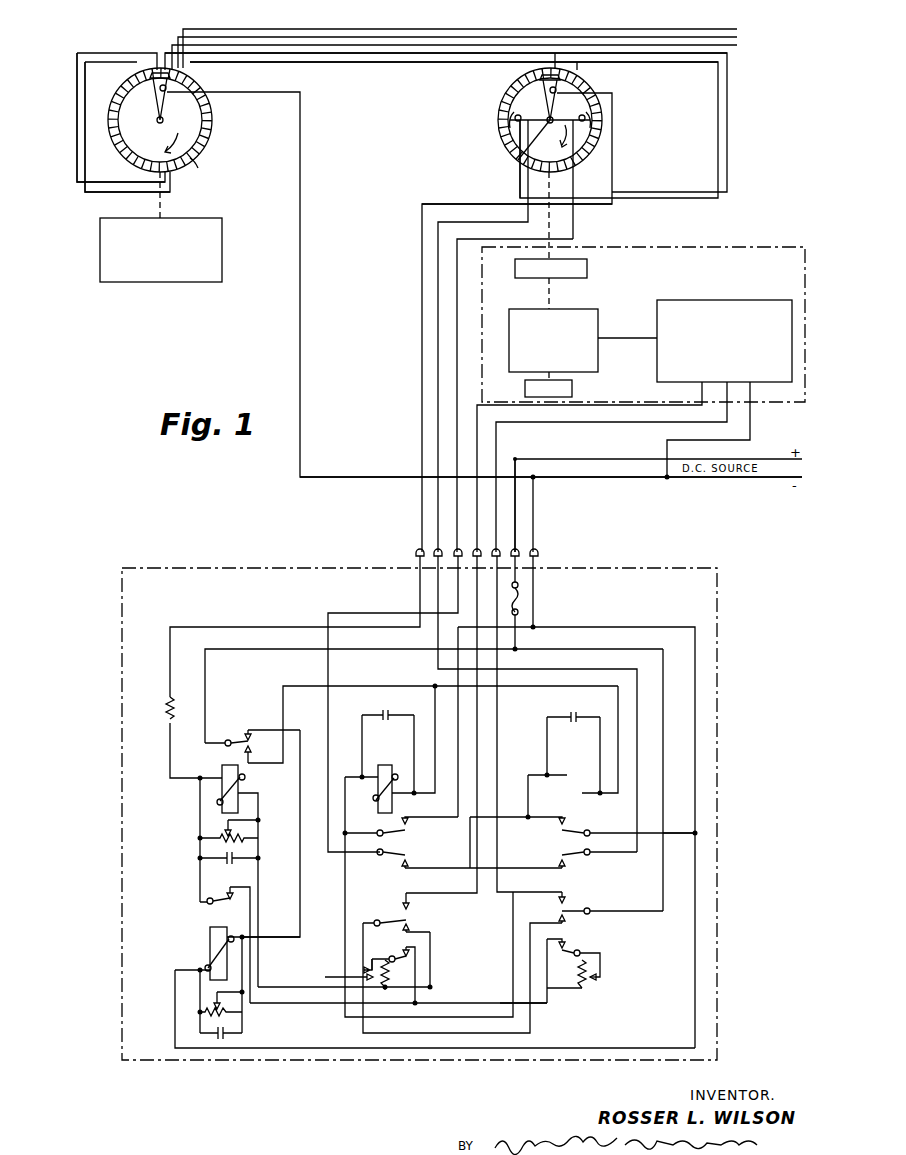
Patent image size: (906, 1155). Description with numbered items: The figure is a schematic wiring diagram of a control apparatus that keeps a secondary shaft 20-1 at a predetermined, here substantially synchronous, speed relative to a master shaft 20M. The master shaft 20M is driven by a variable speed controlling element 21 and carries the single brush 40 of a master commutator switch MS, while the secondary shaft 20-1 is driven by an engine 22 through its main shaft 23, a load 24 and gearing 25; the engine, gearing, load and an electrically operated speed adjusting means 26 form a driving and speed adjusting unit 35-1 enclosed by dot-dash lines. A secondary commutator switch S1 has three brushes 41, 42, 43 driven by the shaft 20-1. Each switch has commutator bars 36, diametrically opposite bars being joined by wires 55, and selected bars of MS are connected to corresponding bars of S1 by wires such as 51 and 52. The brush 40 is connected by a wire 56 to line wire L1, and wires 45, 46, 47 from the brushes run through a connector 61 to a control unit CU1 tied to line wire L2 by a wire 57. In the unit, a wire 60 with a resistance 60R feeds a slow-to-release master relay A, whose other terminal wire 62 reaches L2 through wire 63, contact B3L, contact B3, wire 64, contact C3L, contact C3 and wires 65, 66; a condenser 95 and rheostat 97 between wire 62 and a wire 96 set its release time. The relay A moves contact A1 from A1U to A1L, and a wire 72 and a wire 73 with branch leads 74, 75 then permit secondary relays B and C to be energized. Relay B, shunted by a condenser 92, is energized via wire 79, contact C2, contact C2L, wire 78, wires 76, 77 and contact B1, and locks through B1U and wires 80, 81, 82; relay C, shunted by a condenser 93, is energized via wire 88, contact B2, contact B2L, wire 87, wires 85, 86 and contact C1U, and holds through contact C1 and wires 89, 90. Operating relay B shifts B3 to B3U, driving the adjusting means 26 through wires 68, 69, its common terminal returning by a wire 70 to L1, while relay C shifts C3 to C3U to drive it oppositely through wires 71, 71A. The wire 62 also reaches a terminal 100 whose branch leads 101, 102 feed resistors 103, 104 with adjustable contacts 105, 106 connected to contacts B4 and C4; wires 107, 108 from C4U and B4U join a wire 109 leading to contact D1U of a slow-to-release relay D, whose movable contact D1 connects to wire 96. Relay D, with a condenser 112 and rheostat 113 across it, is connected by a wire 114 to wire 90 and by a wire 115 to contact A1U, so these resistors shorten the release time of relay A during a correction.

The master commutator switch MS is at (220, 118).
The master brush 40 is at (157, 89).
The master shaft 20M is at (157, 122).
The commutator bars 36 is at (192, 160).
The wires 55 is at (84, 158).
The variable speed controlling element 21 is at (223, 238).
The wire 56 is at (300, 282).
The wire 51 is at (300, 55).
The wire 52 is at (388, 62).
The secondary commutator switch S1 is at (640, 113).
The secondary shaft 20-1 is at (512, 152).
The brush 41 is at (524, 86).
The brush 42 is at (506, 119).
The brush 43 is at (597, 130).
The wire 46 is at (527, 188).
The wire 47 is at (574, 215).
The wire 45 is at (613, 189).
The driving and speed adjusting unit 35-1 is at (678, 247).
The gearing 25 is at (588, 270).
The variable speed driving engine 22 is at (530, 308).
The electrically operated speed adjusting means 26 is at (698, 302).
The main shaft 23 is at (600, 380).
The load 24 is at (573, 390).
The wire 69 is at (576, 408).
The wire 71 is at (624, 422).
The wire 70 is at (751, 419).
The line wire L2 is at (788, 453).
The line wire L1 is at (785, 480).
The wire 82 is at (534, 493).
The wire 57 is at (515, 513).
The separable connector 61 is at (552, 556).
The wire 81 is at (535, 584).
The wire 66 is at (518, 618).
The wire 60 is at (420, 576).
The wire 79 is at (438, 594).
The wire 90 is at (626, 627).
The wire 65 is at (664, 758).
The wire 72 is at (224, 649).
The wire 73 is at (289, 686).
The resistance 60R is at (167, 706).
The wire 88 is at (328, 719).
The condenser 92 is at (392, 702).
The branch lead 74 is at (434, 698).
The wire 68 is at (479, 715).
The condenser 93 is at (572, 710).
The branch lead 75 is at (582, 687).
The upper stationary contact A1U is at (250, 733).
The movable contact A1 is at (228, 746).
The lower stationary contact A1L is at (250, 759).
The master relay A is at (239, 801).
The wire 96 is at (200, 816).
The rheostat 97 is at (240, 838).
The condenser 95 is at (232, 864).
The wire 62 is at (259, 882).
The wire 115 is at (301, 886).
The stationary contact D1U is at (238, 890).
The movable contact D1 is at (208, 905).
The relay D is at (218, 953).
The wire 78 is at (344, 928).
The adjustable contact 105 is at (335, 976).
The resistor 103 is at (392, 952).
The branch lead 101 is at (386, 990).
The terminal 100 is at (376, 974).
The wire 109 is at (311, 1003).
The wire 108 is at (432, 993).
The wire 63 is at (432, 959).
The stationary contact B4U is at (410, 949).
The movable contact B4 is at (420, 968).
The movable contact B3 is at (386, 908).
The upper stationary contact B3U is at (410, 905).
The lower stationary contact B3L is at (410, 930).
The wire 64 is at (531, 1033).
The stationary contact B1U is at (408, 818).
The movable contact B1 is at (406, 838).
The wire 77 is at (346, 835).
The stationary contact B2L is at (410, 861).
The movable contact B2 is at (394, 856).
The wire 76 is at (346, 797).
The secondary relay B is at (386, 764).
The wire 80 is at (459, 776).
The wire 71A is at (498, 765).
The wire 87 is at (472, 826).
The wire 85 is at (529, 789).
The wire 86 is at (529, 817).
The stationary contact C1U is at (560, 821).
The movable contact C1 is at (590, 832).
The stationary contact C2L is at (560, 863).
The movable contact C2 is at (590, 855).
The wire 89 is at (680, 836).
The upper stationary contact C3U is at (566, 898).
The movable contact C3 is at (592, 914).
The lower stationary contact C3L is at (560, 921).
The stationary contact C4U is at (565, 944).
The movable contact C4 is at (582, 953).
The resistor 104 is at (590, 965).
The adjustable contact 106 is at (596, 979).
The branch lead 102 is at (570, 988).
The wire 107 is at (548, 1000).
The wire 114 is at (175, 999).
The rheostat 113 is at (205, 1015).
The condenser 112 is at (220, 1040).
The control unit CU1 is at (114, 777).